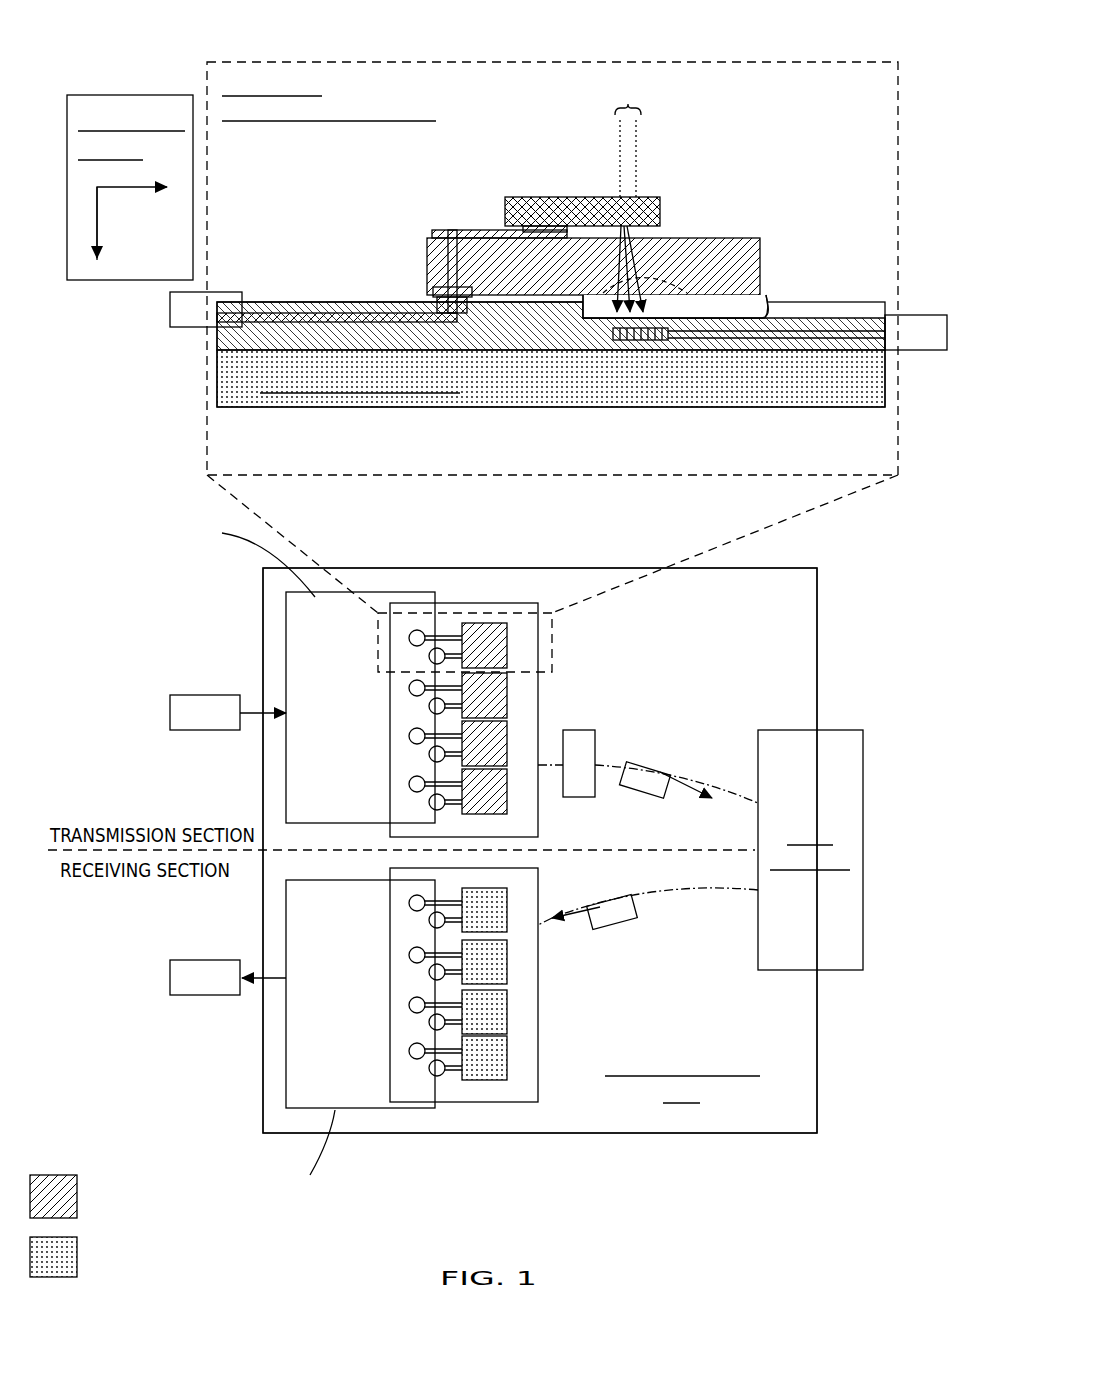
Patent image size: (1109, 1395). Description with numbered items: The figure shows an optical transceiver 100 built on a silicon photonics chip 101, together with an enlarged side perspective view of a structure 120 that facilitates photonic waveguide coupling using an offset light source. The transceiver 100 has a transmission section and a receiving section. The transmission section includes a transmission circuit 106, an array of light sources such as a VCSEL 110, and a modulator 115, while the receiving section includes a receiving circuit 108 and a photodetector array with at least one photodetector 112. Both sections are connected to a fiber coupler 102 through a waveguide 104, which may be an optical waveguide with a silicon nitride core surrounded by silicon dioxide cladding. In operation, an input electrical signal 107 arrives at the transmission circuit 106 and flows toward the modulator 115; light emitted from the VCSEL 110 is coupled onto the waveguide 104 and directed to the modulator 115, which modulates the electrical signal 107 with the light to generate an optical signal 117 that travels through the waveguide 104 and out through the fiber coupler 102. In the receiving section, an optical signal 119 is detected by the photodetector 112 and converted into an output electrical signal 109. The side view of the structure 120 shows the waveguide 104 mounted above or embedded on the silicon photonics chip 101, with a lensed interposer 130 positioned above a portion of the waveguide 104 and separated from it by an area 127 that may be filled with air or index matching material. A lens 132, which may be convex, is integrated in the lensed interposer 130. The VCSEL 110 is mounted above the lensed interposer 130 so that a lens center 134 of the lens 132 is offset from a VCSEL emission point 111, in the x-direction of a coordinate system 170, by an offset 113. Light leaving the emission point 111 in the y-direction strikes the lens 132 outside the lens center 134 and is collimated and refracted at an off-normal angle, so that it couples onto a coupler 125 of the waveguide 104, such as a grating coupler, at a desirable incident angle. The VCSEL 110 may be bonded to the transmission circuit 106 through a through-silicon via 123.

The transceiver 100 is at (823, 1085).
The silicon photonics chip 101 is at (230, 395).
The fiber coupler 102 is at (915, 315).
The waveguide 104 is at (770, 347).
The transmission circuit 106 is at (190, 330).
The input electrical signal 107 is at (193, 695).
The receiving circuit 108 is at (286, 938).
The output electrical signal 109 is at (183, 1000).
The VCSEL 110 is at (503, 214).
The VCSEL emission point 111 is at (617, 218).
The photodetector 112 is at (245, 1258).
The offset 113 is at (632, 102).
The modulator 115 is at (580, 730).
The optical signal 117 is at (668, 775).
The optical signal 119 is at (628, 930).
The structure 120 is at (270, 60).
The through-silicon via 123 is at (445, 263).
The coupler 125 is at (657, 347).
The area 127 is at (768, 303).
The lensed interposer 130 is at (737, 266).
The lens 132 is at (680, 280).
The lens center 134 is at (650, 265).
The coordinate system 170 is at (147, 95).